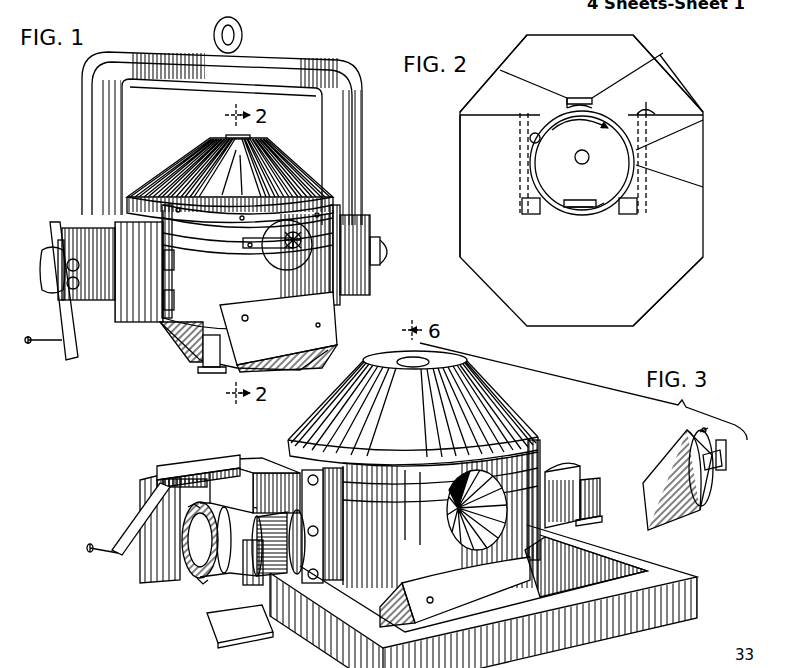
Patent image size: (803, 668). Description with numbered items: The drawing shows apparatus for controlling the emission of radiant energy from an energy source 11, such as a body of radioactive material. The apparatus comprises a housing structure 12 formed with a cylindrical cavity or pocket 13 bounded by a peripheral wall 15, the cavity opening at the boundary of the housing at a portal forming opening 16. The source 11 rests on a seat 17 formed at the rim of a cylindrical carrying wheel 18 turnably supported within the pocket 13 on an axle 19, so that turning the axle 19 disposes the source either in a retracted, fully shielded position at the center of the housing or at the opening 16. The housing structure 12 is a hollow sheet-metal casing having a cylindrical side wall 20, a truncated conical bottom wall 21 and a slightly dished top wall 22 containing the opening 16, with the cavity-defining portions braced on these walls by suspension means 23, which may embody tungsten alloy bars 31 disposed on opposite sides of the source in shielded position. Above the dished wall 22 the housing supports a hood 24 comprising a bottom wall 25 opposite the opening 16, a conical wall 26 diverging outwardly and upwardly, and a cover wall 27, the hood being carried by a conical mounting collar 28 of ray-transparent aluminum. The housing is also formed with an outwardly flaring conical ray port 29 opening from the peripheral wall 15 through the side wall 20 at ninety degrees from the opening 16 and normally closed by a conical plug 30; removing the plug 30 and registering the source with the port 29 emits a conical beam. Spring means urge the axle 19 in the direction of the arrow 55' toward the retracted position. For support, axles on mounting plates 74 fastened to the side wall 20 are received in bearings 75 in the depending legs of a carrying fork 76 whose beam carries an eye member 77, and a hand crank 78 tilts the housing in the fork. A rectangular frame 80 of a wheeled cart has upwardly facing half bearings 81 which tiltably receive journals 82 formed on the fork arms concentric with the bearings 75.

In FIG. 2, the energy source 11 is at (587, 209).
In FIG. 1, the housing structure 12 is at (162, 344).
In FIG. 2, the housing structure 12 is at (452, 128).
In FIG. 3, the housing structure 12 is at (528, 425).
In FIG. 2, the cavity or pocket 13 is at (530, 138).
In FIG. 2, the peripheral wall 15 is at (605, 205).
In FIG. 2, the portal forming opening 16 is at (566, 97).
In FIG. 2, the seat 17 is at (565, 200).
In FIG. 2, the carrying member or wheel 18 is at (540, 153).
In FIG. 2, the axle 19 is at (588, 162).
In FIG. 1, the cylindrical side wall 20 is at (249, 267).
In FIG. 2, the cylindrical side wall 20 is at (459, 193).
In FIG. 3, the cylindrical side wall 20 is at (440, 520).
In FIG. 1, the conical bottom wall 21 is at (191, 360).
In FIG. 2, the conical bottom wall 21 is at (658, 300).
In FIG. 3, the conical bottom wall 21 is at (375, 610).
In FIG. 2, the dished top wall 22 is at (652, 96).
In FIG. 2, the suspension means 23 is at (522, 180).
In FIG. 2, the hood 24 is at (502, 58).
In FIG. 2, the bottom wall 25 is at (590, 97).
In FIG. 2, the conical wall 26 is at (643, 77).
In FIG. 2, the cover wall 27 is at (575, 36).
In FIG. 2, the conical mounting collar 28 is at (678, 73).
In FIG. 1, the conical ray port 29 is at (277, 257).
In FIG. 2, the conical ray port 29 is at (714, 148).
In FIG. 3, the conical ray port 29 is at (477, 510).
In FIG. 1, the conical plug 30 is at (306, 268).
In FIG. 3, the conical plug 30 is at (655, 500).
In FIG. 2, the tungsten alloy bars 31 is at (533, 214).
In FIG. 2, the arrow 55' is at (580, 130).
In FIG. 1, the mounting plates 74 is at (170, 290).
In FIG. 3, the mounting plates 74 is at (540, 455).
In FIG. 1, the axle bearings 75 is at (372, 267).
In FIG. 3, the axle bearings 75 is at (612, 518).
In FIG. 1, the carrying fork 76 is at (117, 122).
In FIG. 1, the eye member 77 is at (243, 30).
In FIG. 1, the hand crank 78 is at (50, 316).
In FIG. 3, the hand crank 78 is at (126, 520).
In FIG. 3, the rectangular frame 80 is at (690, 602).
In FIG. 3, the half bearings 81 is at (598, 495).
In FIG. 1, the journals 82 is at (45, 266).
In FIG. 3, the journals 82 is at (576, 475).